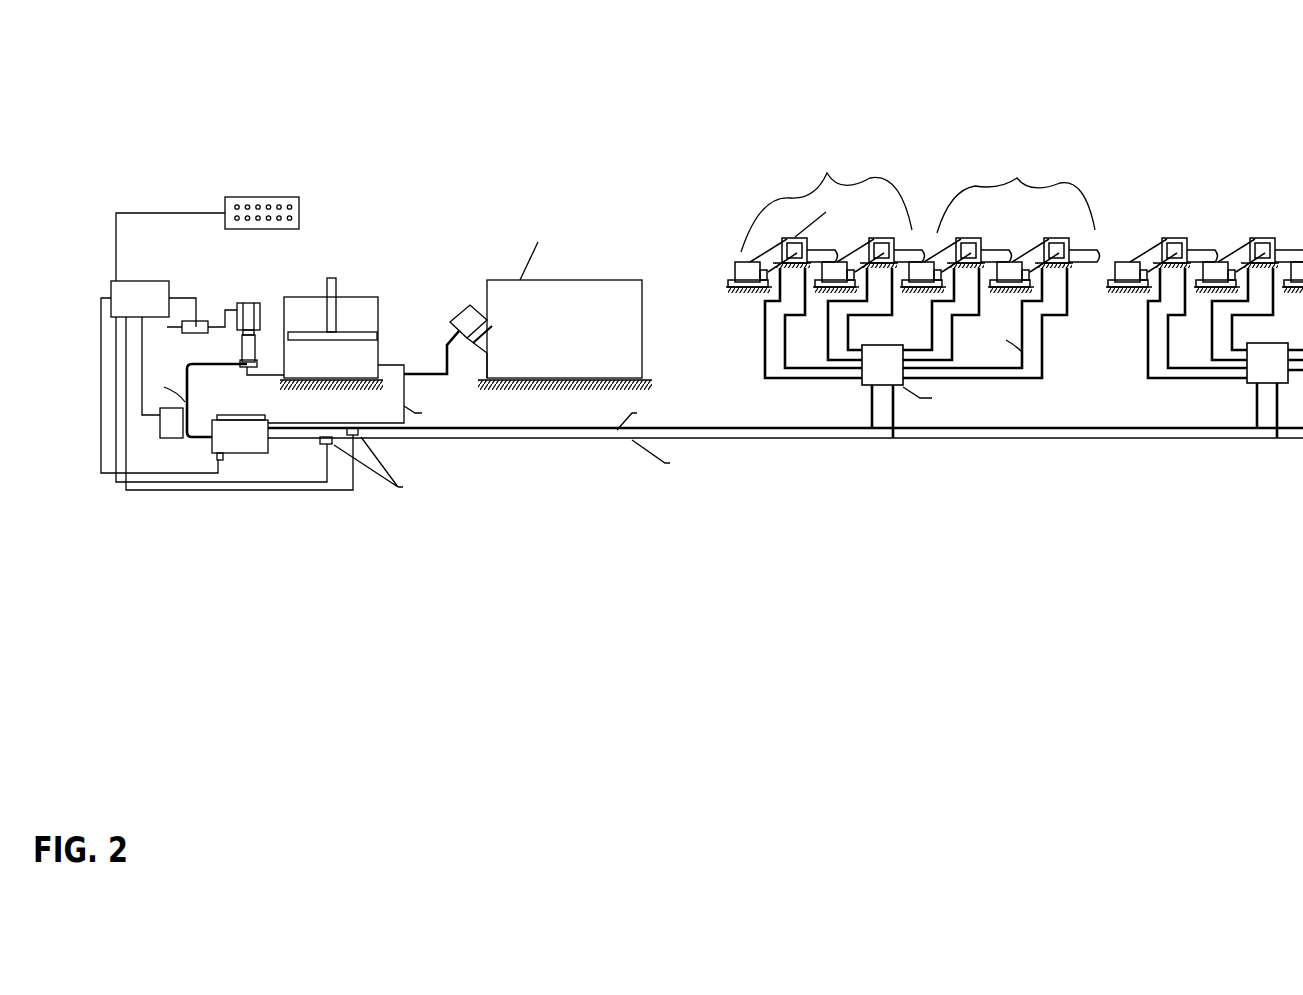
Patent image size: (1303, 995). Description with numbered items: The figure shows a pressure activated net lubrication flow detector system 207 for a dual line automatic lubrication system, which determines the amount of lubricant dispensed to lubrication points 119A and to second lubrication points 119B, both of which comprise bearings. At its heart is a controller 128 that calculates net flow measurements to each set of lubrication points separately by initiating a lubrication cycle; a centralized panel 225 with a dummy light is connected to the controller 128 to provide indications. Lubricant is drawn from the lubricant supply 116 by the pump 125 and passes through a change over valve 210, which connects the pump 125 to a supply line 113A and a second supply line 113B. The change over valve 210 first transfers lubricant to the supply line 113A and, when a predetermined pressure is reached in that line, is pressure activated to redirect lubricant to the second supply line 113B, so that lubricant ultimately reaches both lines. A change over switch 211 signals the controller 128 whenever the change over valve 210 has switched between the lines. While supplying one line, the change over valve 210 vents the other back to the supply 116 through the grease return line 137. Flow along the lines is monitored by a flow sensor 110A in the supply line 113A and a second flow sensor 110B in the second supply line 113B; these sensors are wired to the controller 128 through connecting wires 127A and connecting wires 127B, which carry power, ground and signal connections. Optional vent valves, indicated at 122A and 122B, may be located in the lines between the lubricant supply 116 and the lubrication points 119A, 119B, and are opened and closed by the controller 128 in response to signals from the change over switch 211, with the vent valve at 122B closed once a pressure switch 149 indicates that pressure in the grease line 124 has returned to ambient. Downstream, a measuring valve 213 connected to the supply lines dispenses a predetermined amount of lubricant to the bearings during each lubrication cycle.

The net lubrication flow detector system 207 is at (250, 90).
The centralized panel 225 is at (277, 190).
The pump 125 is at (226, 277).
The controller 128 is at (107, 280).
The lubricant supply 116 is at (390, 327).
The grease line 124 is at (233, 362).
The grease return line 137 is at (540, 412).
The change over valve 210 is at (284, 406).
The pressure switch 149 is at (169, 440).
The change over switch 211 is at (254, 484).
The connecting wires 127A is at (131, 495).
The connecting wires 127B is at (186, 487).
The optional vent valve 122A is at (304, 435).
The optional vent valve 122B is at (283, 448).
The flow sensor 110A is at (366, 440).
The second flow sensor 110B is at (334, 451).
The supply line 113A is at (677, 401).
The second supply line 113B is at (699, 478).
The lubrication points 119A is at (913, 210).
The second lubrication points 119B is at (1120, 217).
The measuring valve 213 is at (1024, 403).